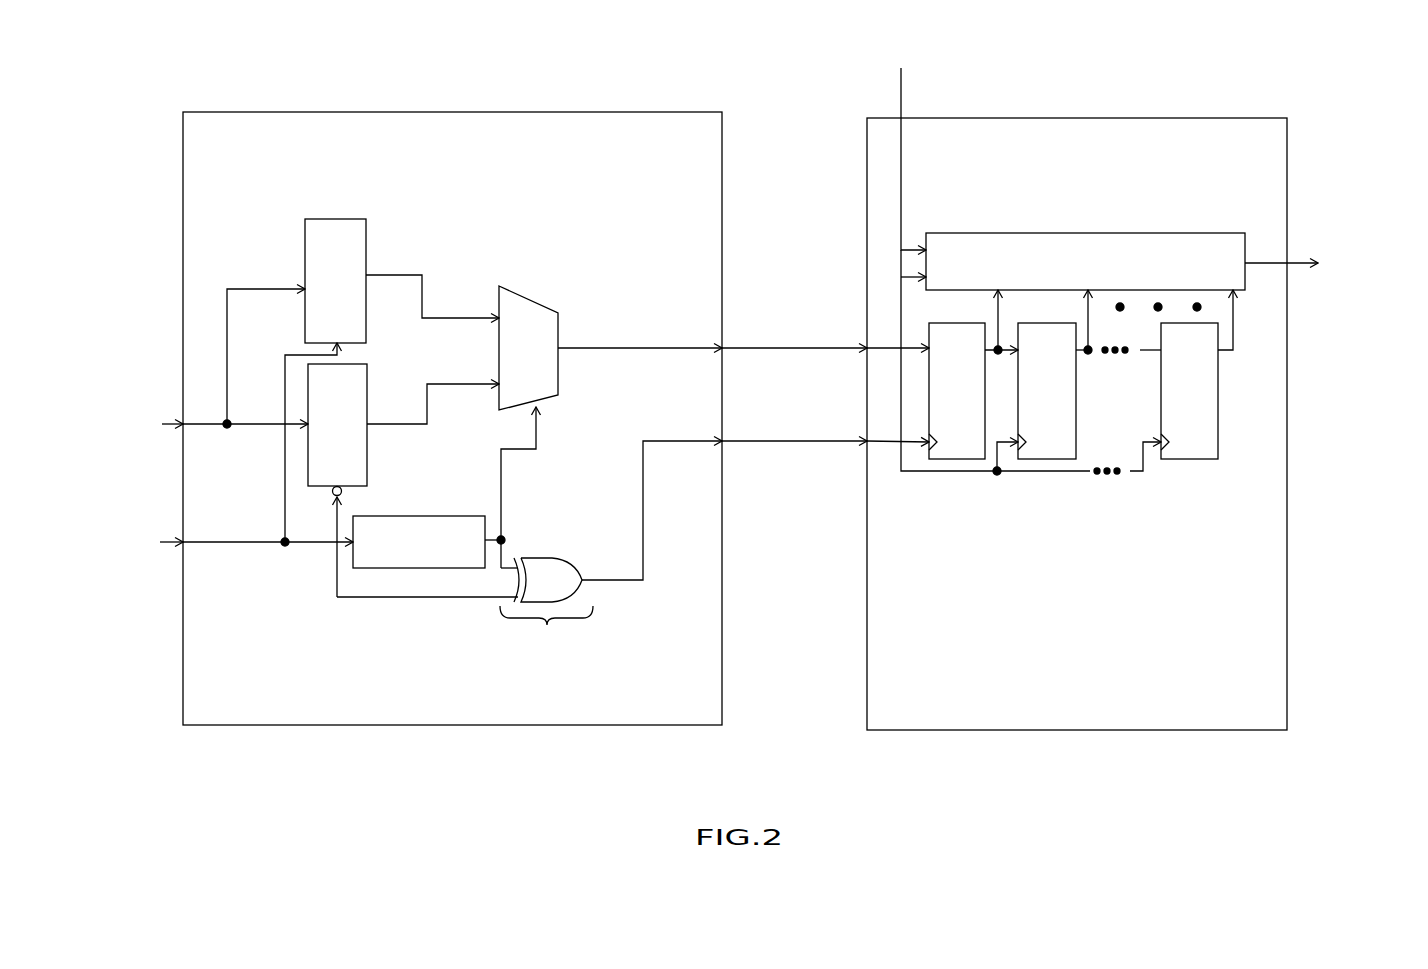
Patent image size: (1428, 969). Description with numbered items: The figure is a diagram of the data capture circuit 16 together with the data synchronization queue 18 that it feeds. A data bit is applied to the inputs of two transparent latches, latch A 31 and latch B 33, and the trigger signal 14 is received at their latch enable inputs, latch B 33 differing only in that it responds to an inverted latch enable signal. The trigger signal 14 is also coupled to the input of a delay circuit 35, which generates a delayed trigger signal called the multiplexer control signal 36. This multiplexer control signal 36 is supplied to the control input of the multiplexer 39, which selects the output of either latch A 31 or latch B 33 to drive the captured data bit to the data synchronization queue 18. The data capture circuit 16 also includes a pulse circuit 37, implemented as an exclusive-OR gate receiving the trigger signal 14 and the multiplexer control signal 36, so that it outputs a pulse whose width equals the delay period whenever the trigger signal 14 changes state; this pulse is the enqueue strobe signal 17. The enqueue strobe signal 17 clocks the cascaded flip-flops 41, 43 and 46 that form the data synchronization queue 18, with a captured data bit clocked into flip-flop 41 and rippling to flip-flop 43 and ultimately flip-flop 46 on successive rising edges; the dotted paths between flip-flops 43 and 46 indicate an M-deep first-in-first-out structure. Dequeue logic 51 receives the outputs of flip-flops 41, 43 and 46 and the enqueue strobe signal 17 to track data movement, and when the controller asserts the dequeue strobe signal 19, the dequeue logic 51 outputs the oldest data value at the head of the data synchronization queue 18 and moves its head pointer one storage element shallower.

The trigger signal 14 is at (212, 463).
The data capture circuit 16 is at (641, 244).
The enqueue strobe signal 17 is at (724, 480).
The data synchronization queue 18 is at (1264, 150).
The dequeue strobe signal 19 is at (1006, 257).
The latch A 31 is at (341, 219).
The latch B 33 is at (367, 386).
The delay circuit 35 is at (395, 516).
The multiplexer control signal 36 is at (503, 500).
The pulse circuit 37 is at (481, 627).
The multiplexer 39 is at (530, 300).
The flip-flop 41 is at (970, 414).
The flip-flop 43 is at (1059, 414).
The flip-flop 46 is at (1201, 414).
The dequeue logic 51 is at (1215, 276).